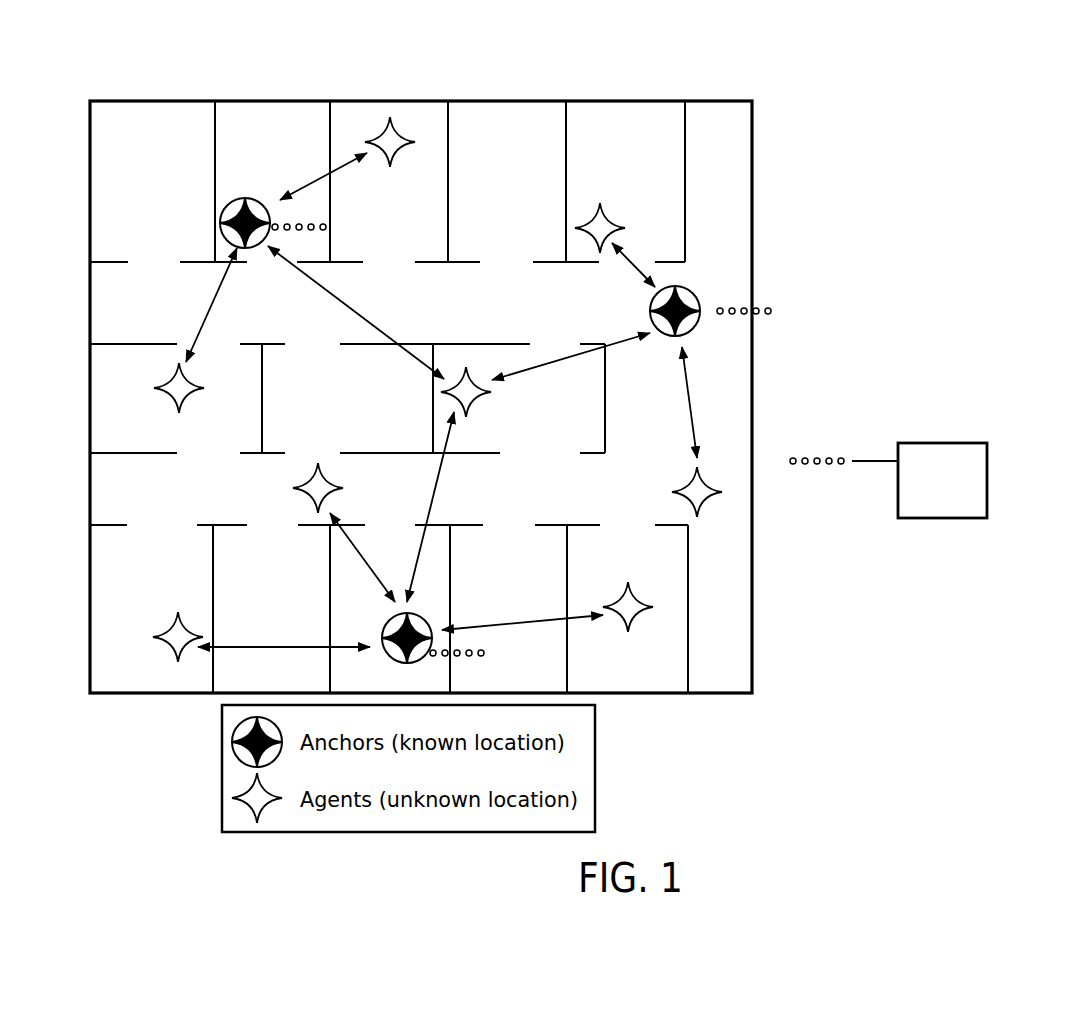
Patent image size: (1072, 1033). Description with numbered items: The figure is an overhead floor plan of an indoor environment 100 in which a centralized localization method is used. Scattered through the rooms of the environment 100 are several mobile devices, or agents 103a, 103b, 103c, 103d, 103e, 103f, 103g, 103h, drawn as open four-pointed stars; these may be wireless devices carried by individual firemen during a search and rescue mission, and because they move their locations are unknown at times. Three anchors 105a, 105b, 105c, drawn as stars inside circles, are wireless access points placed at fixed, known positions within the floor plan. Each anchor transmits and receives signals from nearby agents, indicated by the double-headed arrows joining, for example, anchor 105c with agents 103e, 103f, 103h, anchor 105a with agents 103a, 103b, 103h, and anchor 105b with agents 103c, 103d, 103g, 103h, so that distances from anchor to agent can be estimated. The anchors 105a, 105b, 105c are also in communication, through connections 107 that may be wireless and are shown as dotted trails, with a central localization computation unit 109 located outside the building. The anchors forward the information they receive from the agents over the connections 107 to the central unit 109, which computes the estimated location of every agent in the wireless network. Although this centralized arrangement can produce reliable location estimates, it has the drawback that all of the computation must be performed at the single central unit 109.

The indoor environment 100 is at (672, 70).
The agent 103a is at (610, 218).
The agent 103b is at (703, 505).
The agent 103c is at (622, 622).
The agent 103d is at (166, 648).
The agent 103e is at (166, 399).
The agent 103f is at (396, 137).
The agent 103g is at (335, 492).
The agent 103h is at (476, 402).
The anchor 105a is at (696, 294).
The anchor 105b is at (398, 660).
The anchor 105c is at (238, 198).
The connection 107 is at (318, 223).
The central localization computation unit 109 is at (923, 443).